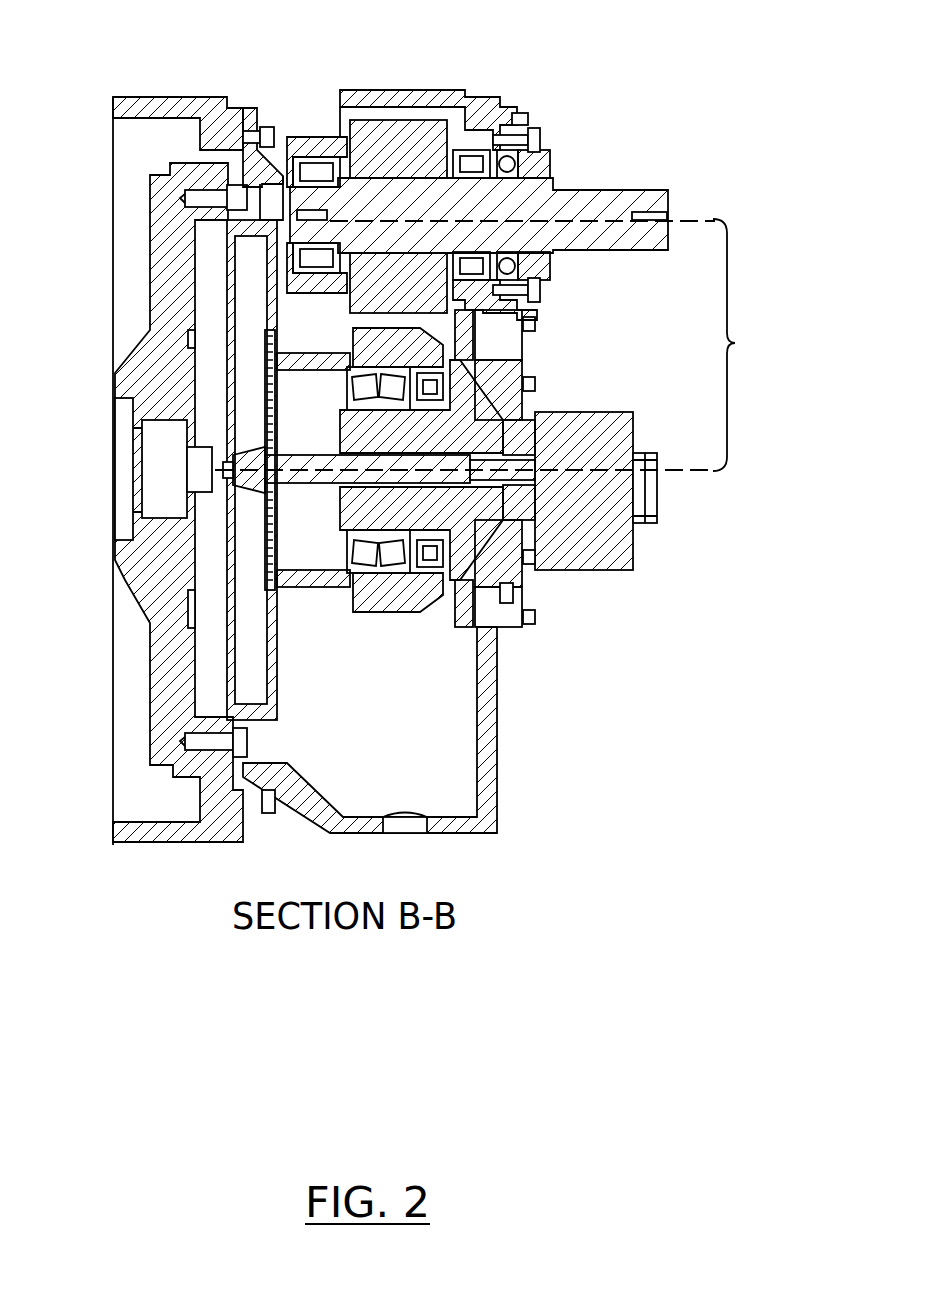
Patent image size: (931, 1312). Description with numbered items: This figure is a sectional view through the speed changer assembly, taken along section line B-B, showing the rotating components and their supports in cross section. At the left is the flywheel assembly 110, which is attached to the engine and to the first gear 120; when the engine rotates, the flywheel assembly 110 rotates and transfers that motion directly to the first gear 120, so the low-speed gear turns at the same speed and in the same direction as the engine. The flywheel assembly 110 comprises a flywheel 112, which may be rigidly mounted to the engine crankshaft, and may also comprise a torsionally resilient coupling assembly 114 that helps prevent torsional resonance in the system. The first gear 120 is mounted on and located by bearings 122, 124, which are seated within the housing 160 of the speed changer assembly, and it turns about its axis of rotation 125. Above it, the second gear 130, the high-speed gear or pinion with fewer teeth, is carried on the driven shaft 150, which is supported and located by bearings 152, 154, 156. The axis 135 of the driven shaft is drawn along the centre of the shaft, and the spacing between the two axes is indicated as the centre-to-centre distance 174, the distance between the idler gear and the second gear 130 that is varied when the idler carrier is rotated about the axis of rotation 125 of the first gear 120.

The flywheel assembly 110 is at (277, 73).
The flywheel 112 is at (143, 347).
The torsionally resilient coupling assembly 114 is at (263, 227).
The first gear 120 is at (433, 595).
The bearing 122 is at (367, 552).
The bearing 124 is at (432, 553).
The axis of rotation 125 is at (684, 472).
The second gear 130 is at (393, 138).
The input shaft axis 135 is at (679, 221).
The driven shaft 150 is at (577, 243).
The bearing 152 is at (316, 165).
The bearing 154 is at (470, 158).
The bearing 156 is at (507, 163).
The housing 160 is at (490, 730).
The centre-to-centre distance 174 is at (749, 345).